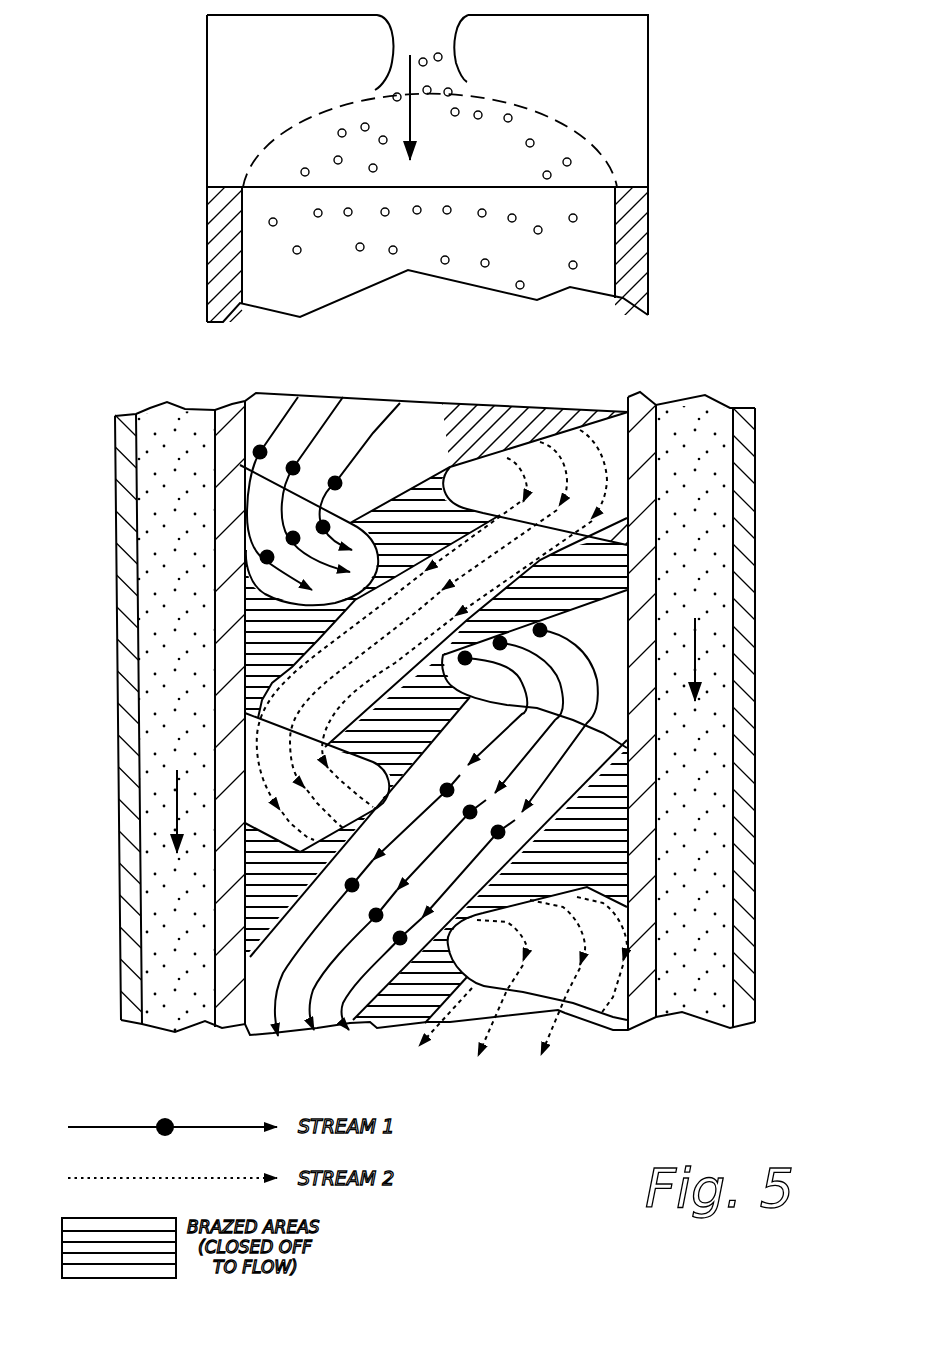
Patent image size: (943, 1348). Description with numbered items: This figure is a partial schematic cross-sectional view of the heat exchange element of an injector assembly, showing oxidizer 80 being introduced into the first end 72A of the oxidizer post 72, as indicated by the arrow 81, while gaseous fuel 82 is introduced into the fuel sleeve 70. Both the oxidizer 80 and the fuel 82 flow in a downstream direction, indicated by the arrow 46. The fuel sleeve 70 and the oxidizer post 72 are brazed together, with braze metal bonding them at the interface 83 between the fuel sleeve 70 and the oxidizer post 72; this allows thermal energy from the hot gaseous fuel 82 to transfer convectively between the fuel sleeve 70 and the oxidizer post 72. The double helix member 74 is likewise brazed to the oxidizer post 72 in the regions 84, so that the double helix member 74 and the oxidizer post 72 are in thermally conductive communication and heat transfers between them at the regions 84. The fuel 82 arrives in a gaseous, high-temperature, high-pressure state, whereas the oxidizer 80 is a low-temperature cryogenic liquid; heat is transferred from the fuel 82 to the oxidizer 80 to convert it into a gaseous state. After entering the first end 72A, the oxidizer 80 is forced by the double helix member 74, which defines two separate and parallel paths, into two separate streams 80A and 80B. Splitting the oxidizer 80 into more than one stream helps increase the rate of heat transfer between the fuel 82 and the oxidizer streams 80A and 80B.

The arrow 46 is at (172, 827).
The fuel sleeve 70 is at (742, 438).
The oxidizer post 72 is at (617, 184).
The first end 72A is at (457, 70).
The double helix member 74 is at (450, 428).
The oxidizer 80 is at (587, 238).
The oxidizer stream 80A is at (597, 448).
The oxidizer stream 80B is at (368, 440).
The arrow 81 is at (413, 108).
The gaseous fuel 82 is at (175, 542).
The interface 83 is at (214, 607).
The regions 84 is at (245, 713).